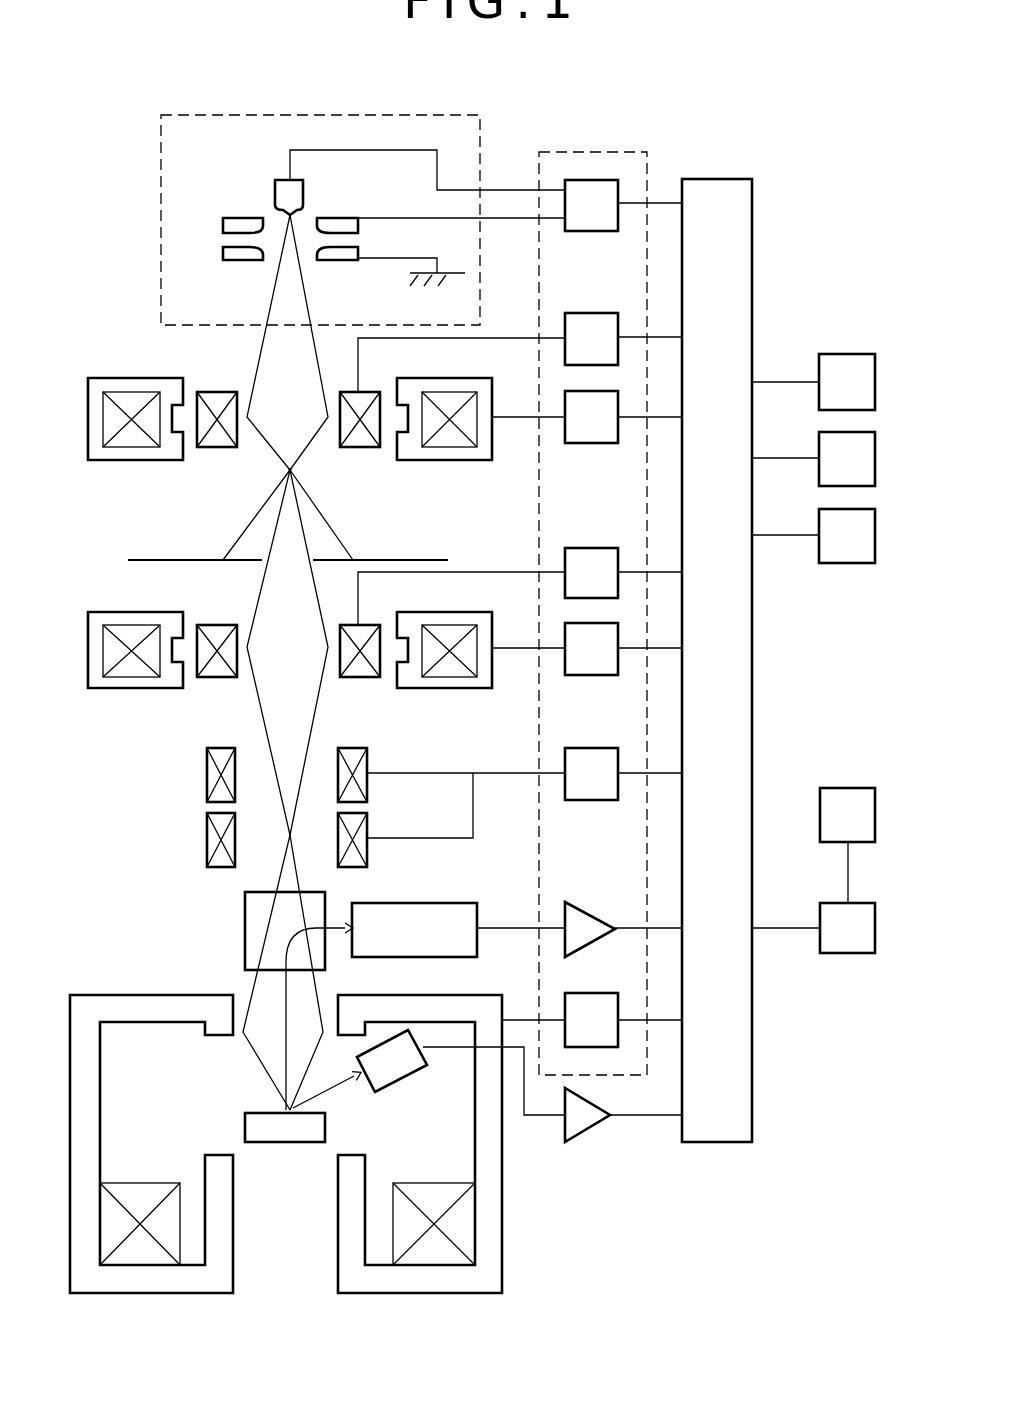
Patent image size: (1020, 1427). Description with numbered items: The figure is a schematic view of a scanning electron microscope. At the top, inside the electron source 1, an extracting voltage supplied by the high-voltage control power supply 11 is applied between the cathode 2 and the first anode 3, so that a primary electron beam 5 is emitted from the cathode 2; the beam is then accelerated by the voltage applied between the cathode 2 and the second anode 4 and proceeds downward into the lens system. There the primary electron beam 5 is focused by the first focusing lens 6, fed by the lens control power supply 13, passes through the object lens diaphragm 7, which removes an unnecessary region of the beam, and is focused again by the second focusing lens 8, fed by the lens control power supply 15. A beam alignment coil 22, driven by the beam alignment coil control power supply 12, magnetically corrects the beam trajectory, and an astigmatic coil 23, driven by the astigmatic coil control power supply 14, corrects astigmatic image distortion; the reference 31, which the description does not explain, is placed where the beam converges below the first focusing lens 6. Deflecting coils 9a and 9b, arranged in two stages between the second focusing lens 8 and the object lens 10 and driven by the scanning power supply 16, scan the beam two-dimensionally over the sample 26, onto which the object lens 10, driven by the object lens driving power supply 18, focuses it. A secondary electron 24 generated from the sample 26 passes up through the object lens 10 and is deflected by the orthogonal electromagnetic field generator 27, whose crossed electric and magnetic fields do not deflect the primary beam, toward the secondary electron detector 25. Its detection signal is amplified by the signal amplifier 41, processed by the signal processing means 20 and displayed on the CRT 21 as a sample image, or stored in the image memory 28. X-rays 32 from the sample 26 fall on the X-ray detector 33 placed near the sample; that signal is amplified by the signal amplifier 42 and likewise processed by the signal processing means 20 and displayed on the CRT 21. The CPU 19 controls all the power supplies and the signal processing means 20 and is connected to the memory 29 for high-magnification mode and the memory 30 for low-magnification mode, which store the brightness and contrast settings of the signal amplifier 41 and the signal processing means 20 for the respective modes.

The electron source 1 is at (295, 110).
The cathode 2 is at (276, 176).
The first anode 3 is at (241, 215).
The second anode 4 is at (217, 252).
The primary electron beam 5 is at (249, 367).
The first focusing lens 6 is at (141, 375).
The object lens diaphragm 7 is at (166, 556).
The second focusing lens 8 is at (119, 609).
The deflecting coil 9a is at (202, 773).
The deflecting coil 9b is at (202, 837).
The object lens 10 is at (128, 991).
The high-voltage control power supply 11 is at (623, 205).
The beam alignment coil control power supply 12 is at (623, 339).
The lens control power supply 13 is at (623, 417).
The astigmatic coil control power supply 14 is at (623, 573).
The lens control power supply 15 is at (623, 649).
The scanning power supply 16 is at (623, 774).
The object lens driving power supply 18 is at (623, 1020).
The CPU 19 is at (714, 176).
The signal processing means 20 is at (813, 928).
The CRT 21 is at (847, 845).
The beam alignment coil 22 is at (212, 452).
The astigmatic coil 23 is at (211, 682).
The secondary electron 24 is at (280, 997).
The secondary electron detector 25 is at (450, 900).
The sample 26 is at (289, 1148).
The orthogonal electromagnetic field generator 27 is at (241, 912).
The image memory 28 is at (813, 382).
The memory for high-magnification mode 29 is at (813, 459).
The memory for low-magnification mode 30 is at (813, 536).
The crossover point 31 is at (300, 474).
The X-rays 32 is at (330, 1098).
The X-ray detector 33 is at (410, 1092).
The signal amplifier 41 is at (599, 919).
The signal amplifier 42 is at (583, 1134).